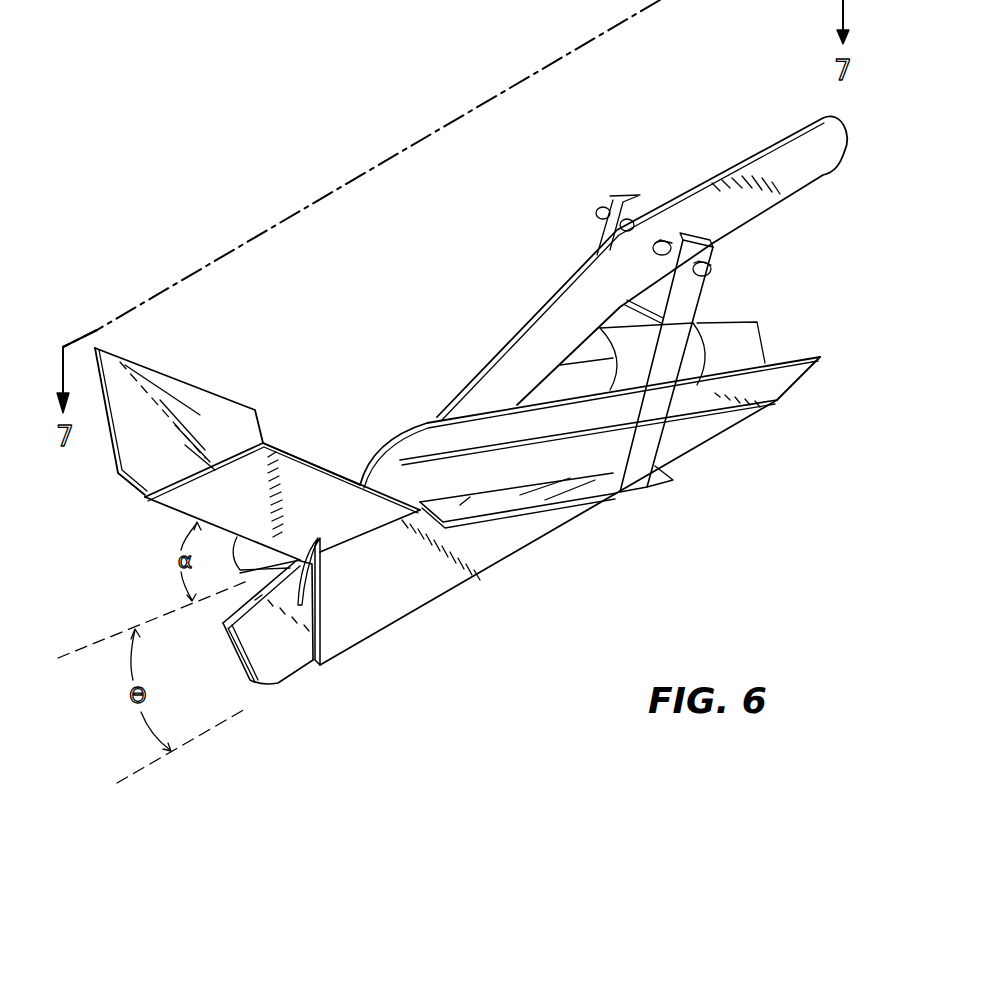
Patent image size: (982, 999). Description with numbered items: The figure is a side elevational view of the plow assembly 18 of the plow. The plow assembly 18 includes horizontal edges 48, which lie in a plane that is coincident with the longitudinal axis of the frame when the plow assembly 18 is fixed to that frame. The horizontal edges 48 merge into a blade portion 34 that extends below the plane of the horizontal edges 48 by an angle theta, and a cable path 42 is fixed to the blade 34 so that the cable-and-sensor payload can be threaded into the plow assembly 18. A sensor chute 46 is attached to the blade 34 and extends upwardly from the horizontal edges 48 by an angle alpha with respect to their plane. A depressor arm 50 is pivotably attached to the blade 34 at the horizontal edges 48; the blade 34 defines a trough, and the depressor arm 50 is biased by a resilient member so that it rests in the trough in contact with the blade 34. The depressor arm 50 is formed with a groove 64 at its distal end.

The plow assembly 18 is at (311, 834).
The blade portion 34 is at (448, 593).
The cable path 42 is at (743, 405).
The sensor chute 46 is at (177, 410).
The horizontal edges 48 is at (545, 505).
The depressor arm 50 is at (800, 158).
The groove 64 is at (247, 680).